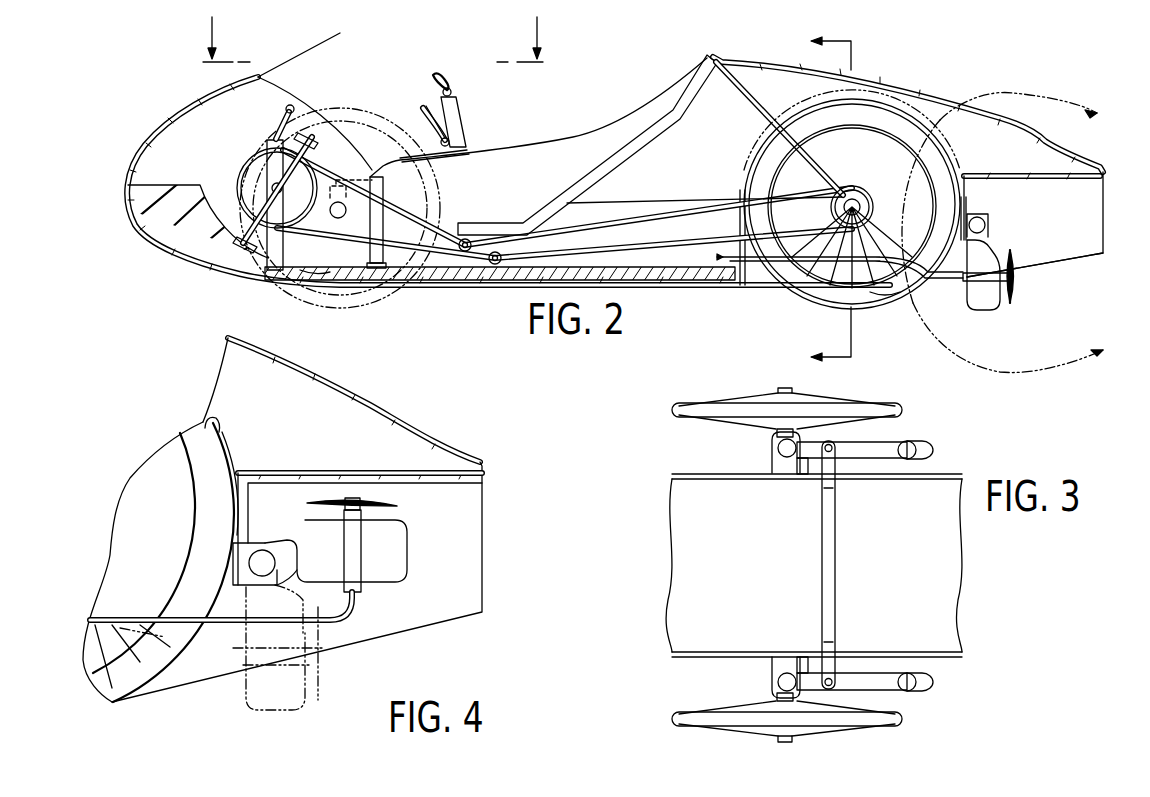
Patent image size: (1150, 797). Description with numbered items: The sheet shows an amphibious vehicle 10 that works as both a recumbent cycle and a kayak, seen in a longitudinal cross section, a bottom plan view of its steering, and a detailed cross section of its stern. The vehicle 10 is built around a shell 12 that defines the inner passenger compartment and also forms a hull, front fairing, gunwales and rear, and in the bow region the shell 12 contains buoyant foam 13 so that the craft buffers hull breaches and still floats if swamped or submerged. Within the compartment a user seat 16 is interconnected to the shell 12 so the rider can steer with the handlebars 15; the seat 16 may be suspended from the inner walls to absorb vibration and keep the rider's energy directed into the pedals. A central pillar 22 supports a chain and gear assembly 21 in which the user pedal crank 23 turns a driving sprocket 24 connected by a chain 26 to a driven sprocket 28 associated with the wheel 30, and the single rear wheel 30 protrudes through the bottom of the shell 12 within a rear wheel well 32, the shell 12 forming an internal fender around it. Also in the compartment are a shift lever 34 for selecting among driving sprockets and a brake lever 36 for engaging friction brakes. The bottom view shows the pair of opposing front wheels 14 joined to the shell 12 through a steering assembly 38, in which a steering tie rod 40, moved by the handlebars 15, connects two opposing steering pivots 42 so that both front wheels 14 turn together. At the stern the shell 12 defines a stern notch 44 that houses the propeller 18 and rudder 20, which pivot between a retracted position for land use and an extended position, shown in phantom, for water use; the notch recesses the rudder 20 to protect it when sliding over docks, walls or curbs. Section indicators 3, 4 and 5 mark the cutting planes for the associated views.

In FIG. 2, the amphibious vehicle 10 is at (170, 98).
In FIG. 2, the shell 12 is at (923, 73).
In FIG. 3, the shell 12 is at (695, 476).
In FIG. 4, the shell 12 is at (411, 430).
In FIG. 2, the buoyant foam 13 is at (173, 237).
In FIG. 2, the front wheels 14 is at (393, 300).
In FIG. 3, the front wheels 14 is at (700, 400).
In FIG. 2, the handlebars 15 is at (433, 98).
In FIG. 3, the handlebars 15 is at (940, 453).
In FIG. 2, the user seat 16 is at (640, 137).
In FIG. 2, the propeller 18 is at (1017, 292).
In FIG. 4, the propeller 18 is at (322, 678).
In FIG. 2, the rudder 20 is at (970, 302).
In FIG. 4, the rudder 20 is at (380, 570).
In FIG. 2, the chain and gear assembly 21 is at (240, 153).
In FIG. 2, the central pillar 22 is at (267, 143).
In FIG. 2, the user pedal crank 23 is at (243, 263).
In FIG. 2, the driving sprocket 24 is at (351, 210).
In FIG. 2, the chain 26 is at (343, 140).
In FIG. 2, the driven sprocket 28 is at (830, 206).
In FIG. 2, the rear wheel 30 is at (803, 293).
In FIG. 4, the rear wheel 30 is at (197, 507).
In FIG. 2, the rear wheel well 32 is at (883, 100).
In FIG. 4, the rear wheel well 32 is at (207, 418).
In FIG. 2, the shift lever 34 is at (447, 90).
In FIG. 2, the brake lever 36 is at (420, 107).
In FIG. 2, the steering assembly 38 is at (357, 158).
In FIG. 3, the steering assembly 38 is at (875, 668).
In FIG. 3, the steering tie rod 40 is at (822, 567).
In FIG. 3, the steering pivots 42 is at (787, 458).
In FIG. 2, the stern notch 44 is at (1060, 247).
In FIG. 4, the stern notch 44 is at (453, 597).
In FIG. 2, the section line 3 is at (370, 39).
In FIG. 2, the section line 4 is at (1012, 232).
In FIG. 2, the section line 5 is at (820, 199).